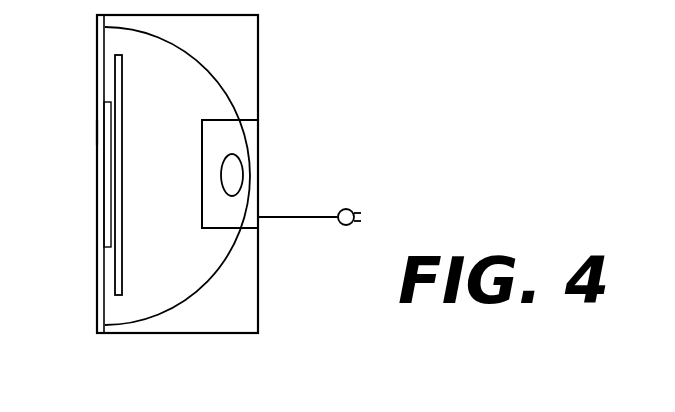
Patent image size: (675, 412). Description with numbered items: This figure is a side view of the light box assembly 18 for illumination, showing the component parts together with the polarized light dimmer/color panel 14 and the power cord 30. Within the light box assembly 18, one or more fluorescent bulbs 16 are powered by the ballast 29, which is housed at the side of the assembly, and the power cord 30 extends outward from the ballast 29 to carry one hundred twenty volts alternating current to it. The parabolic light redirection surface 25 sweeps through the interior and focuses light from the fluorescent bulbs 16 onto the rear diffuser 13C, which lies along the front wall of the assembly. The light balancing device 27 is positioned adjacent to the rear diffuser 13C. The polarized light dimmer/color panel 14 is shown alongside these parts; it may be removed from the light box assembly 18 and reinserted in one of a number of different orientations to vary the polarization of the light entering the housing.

The rear diffuser 13C is at (97, 132).
The polarized light dimmer/color panel 14 is at (122, 57).
The fluorescent bulb 16 is at (243, 165).
The light box assembly 18 is at (259, 303).
The parabolic light redirection surface 25 is at (190, 60).
The light balancing device 27 is at (107, 250).
The ballast 29 is at (245, 120).
The power cord 30 is at (347, 208).